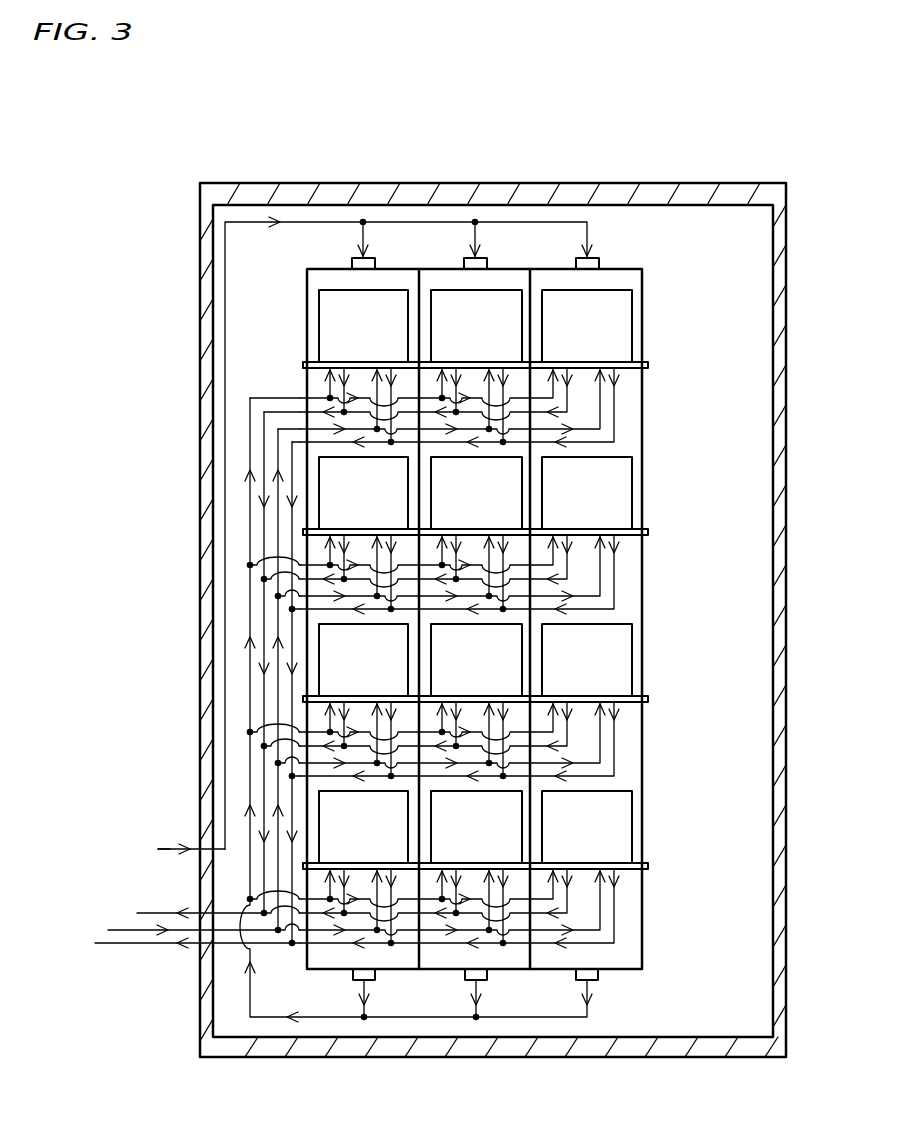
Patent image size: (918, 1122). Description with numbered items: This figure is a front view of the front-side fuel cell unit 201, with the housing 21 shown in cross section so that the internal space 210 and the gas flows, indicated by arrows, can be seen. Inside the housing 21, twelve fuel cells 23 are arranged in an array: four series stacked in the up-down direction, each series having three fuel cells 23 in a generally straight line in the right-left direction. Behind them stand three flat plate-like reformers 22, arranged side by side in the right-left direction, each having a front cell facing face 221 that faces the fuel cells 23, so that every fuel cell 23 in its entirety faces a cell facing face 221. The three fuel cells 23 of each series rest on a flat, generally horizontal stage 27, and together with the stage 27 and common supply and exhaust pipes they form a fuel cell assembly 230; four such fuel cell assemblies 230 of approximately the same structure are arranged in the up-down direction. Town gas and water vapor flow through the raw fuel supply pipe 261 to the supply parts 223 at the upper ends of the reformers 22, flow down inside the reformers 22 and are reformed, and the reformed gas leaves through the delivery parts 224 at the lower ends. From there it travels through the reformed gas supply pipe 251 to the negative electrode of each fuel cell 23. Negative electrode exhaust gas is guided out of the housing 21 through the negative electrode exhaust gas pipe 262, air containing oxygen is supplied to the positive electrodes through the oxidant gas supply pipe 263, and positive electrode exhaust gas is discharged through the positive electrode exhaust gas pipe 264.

The housing 21 is at (210, 222).
The reformer 22 is at (432, 553).
The cell facing face 221 is at (316, 281).
The supply part 223 is at (352, 266).
The delivery part 224 is at (370, 973).
The fuel cell 23 is at (328, 327).
The stage 27 is at (648, 367).
The fuel cell assembly 230 is at (652, 385).
The fuel cell unit 201 is at (670, 232).
The internal space 210 is at (747, 248).
The reformed gas supply pipe 251 is at (250, 990).
The raw fuel supply pipe 261 is at (170, 848).
The negative electrode exhaust gas pipe 262 is at (165, 840).
The oxidant gas supply pipe 263 is at (148, 912).
The positive electrode exhaust gas pipe 264 is at (122, 943).